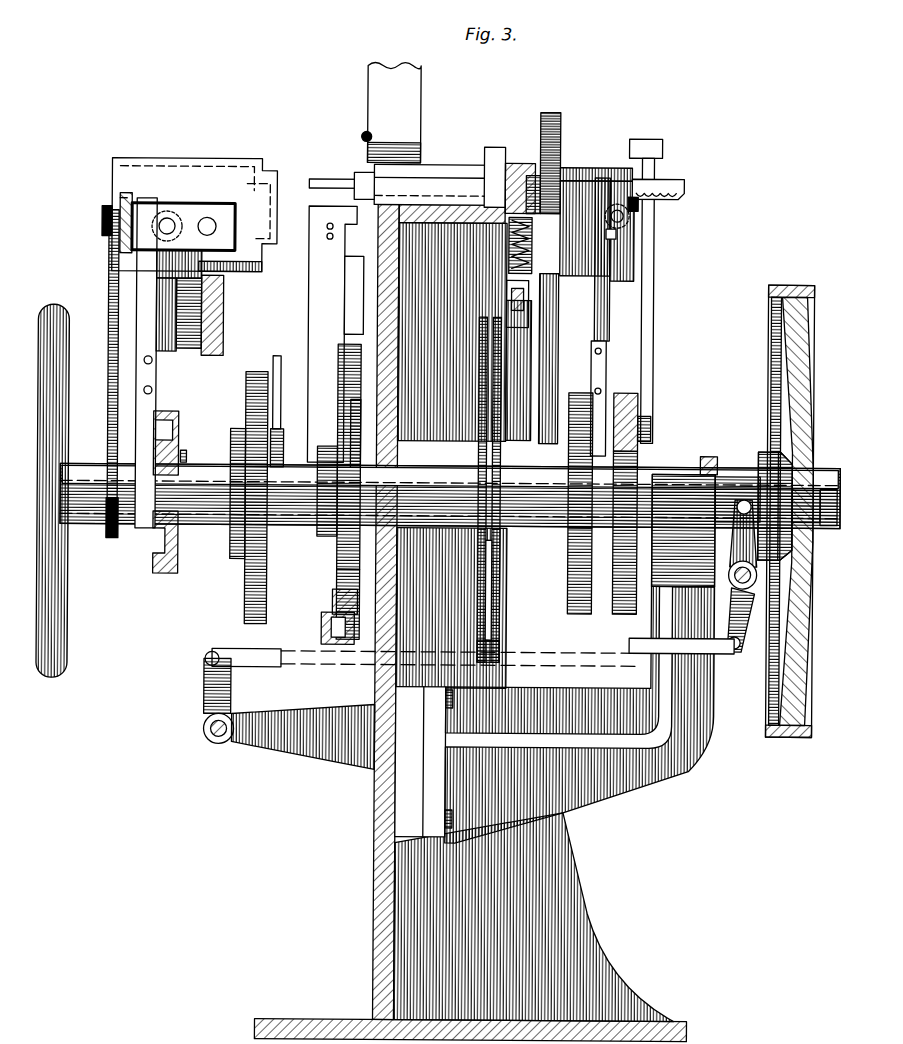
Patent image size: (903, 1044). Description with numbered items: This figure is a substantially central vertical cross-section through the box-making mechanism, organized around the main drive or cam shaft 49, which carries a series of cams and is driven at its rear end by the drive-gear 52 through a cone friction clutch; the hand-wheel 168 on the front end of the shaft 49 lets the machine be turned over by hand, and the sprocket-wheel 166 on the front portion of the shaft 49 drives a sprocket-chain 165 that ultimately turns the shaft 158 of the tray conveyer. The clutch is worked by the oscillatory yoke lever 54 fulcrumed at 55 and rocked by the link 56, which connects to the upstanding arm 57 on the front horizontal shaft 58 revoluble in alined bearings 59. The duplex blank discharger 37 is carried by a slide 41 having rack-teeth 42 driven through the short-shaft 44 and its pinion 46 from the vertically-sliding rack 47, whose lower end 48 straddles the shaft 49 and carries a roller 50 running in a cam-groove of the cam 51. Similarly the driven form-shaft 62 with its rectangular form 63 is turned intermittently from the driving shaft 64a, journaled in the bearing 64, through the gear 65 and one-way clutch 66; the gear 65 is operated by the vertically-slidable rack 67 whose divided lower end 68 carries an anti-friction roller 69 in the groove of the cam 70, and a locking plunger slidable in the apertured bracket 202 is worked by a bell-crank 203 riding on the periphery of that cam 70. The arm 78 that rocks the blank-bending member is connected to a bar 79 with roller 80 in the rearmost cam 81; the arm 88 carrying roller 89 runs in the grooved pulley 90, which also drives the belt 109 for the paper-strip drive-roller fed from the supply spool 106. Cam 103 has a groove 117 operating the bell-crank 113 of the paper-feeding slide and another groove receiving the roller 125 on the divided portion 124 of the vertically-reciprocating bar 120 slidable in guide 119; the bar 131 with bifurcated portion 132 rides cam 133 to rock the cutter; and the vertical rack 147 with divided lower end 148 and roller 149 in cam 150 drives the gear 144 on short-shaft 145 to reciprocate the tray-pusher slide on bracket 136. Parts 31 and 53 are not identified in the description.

The column 31 is at (380, 89).
The duplex blank discharger 37 is at (458, 170).
The slide 41 is at (680, 180).
The rack-teeth 42 is at (665, 198).
The short-shaft 44 is at (625, 215).
The pinion 46 is at (618, 225).
The vertically-sliding rack 47 is at (598, 170).
The lower end 48 is at (630, 405).
The main drive-shaft 49 is at (93, 505).
The roller 50 is at (600, 395).
The cam 51 is at (578, 581).
The drive-gear 52 is at (790, 360).
The hub 53 is at (775, 460).
The oscillatory yoke lever 54 is at (745, 625).
The fulcrum 55 is at (730, 572).
The link 56 is at (240, 655).
The upstanding arm 57 is at (210, 700).
The front horizontal shaft 58 is at (205, 736).
The bearings 59 is at (285, 745).
The form-shaft 62 is at (358, 175).
The rectangular form 63 is at (345, 180).
The bearing 64 is at (583, 168).
The driving shaft 64a is at (570, 195).
The gear 65 is at (532, 175).
The one-way clutch 66 is at (515, 165).
The vertically-slidable rack 67 is at (548, 130).
The divided lower end 68 is at (548, 402).
The anti-friction roller 69 is at (505, 400).
The cam 70 is at (540, 440).
The arm 78 is at (640, 160).
The bar 79 is at (652, 282).
The anti-friction roller 80 is at (645, 420).
The rearmost cam 81 is at (624, 543).
The arm 88 is at (533, 660).
The roller 89 is at (480, 622).
The grooved pulley 90 is at (478, 575).
The cam 103 is at (335, 590).
The supply-roll 106 is at (160, 270).
The belt 109 is at (490, 320).
The bell-crank 113 is at (328, 625).
The cam-groove 117 is at (335, 605).
The guide 119 is at (310, 288).
The vertically-reciprocating bar 120 is at (310, 318).
The divided portion 124 is at (328, 545).
The roller 125 is at (355, 430).
The bar 131 is at (274, 362).
The bifurcated portion 132 is at (282, 445).
The cam 133 is at (258, 540).
The bracket 136 is at (140, 252).
The gear 144 is at (200, 205).
The short-shaft 145 is at (168, 215).
The vertical rack 147 is at (150, 345).
The divided lower end 148 is at (150, 545).
The roller 149 is at (165, 422).
The cam 150 is at (173, 430).
The shaft 158 is at (112, 215).
The sprocket-chain 165 is at (110, 397).
The sprocket-wheel 166 is at (112, 542).
The hand-wheel 168 is at (55, 334).
The apertured bracket 202 is at (530, 246).
The bell-crank 203 is at (522, 322).